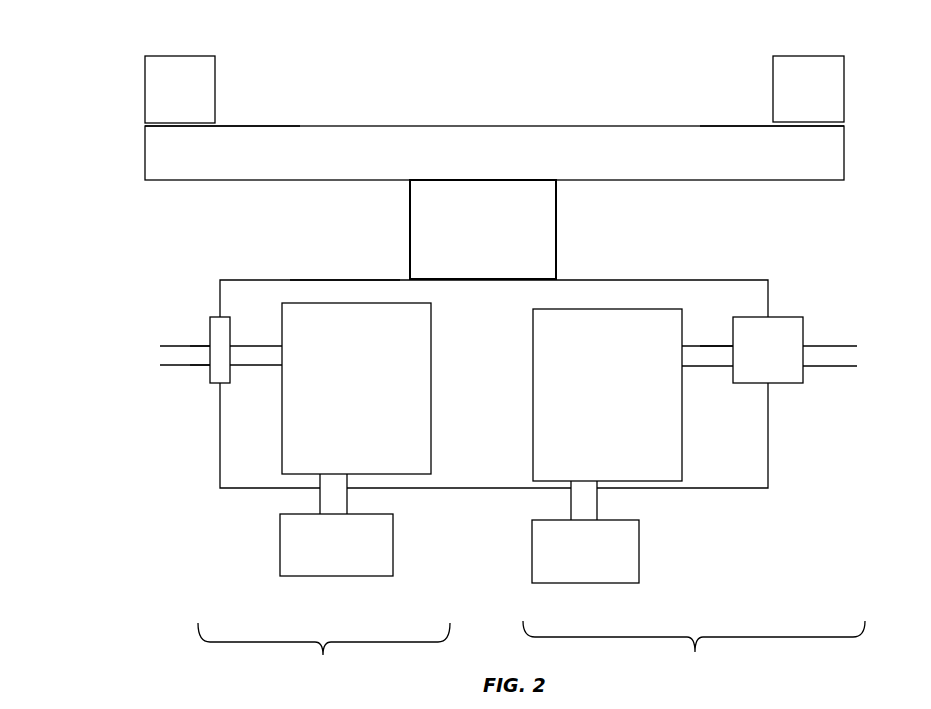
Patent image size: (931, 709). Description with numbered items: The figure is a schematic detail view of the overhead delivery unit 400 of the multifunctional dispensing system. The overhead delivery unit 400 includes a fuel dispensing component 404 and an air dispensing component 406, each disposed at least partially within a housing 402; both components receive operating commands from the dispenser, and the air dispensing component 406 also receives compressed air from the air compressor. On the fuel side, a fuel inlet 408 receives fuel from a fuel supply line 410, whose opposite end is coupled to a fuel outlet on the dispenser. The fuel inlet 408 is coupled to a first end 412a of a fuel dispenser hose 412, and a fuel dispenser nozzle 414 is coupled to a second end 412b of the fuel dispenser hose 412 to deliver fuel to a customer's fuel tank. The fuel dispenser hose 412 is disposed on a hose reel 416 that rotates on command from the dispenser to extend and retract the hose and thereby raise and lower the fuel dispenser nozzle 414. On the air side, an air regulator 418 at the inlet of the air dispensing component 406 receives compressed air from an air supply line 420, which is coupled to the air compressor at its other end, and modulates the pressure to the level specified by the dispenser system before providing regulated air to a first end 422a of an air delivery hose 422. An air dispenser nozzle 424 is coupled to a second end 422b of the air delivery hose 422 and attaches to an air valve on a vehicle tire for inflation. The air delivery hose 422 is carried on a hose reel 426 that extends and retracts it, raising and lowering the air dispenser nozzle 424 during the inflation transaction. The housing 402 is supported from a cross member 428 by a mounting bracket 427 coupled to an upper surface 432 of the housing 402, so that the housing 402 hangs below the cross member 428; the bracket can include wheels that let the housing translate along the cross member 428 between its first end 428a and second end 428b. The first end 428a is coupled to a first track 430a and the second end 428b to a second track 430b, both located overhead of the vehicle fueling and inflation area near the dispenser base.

The overhead delivery unit 400 is at (78, 110).
The housing 402 is at (256, 280).
The fuel dispensing component 404 is at (324, 652).
The air dispensing component 406 is at (694, 648).
The fuel inlet 408 is at (210, 372).
The fuel supply line 410 is at (185, 348).
The fuel dispenser hose 412 is at (270, 347).
The first end of fuel dispenser hose 412a is at (247, 368).
The second end of fuel dispenser hose 412b is at (323, 499).
The fuel dispenser nozzle 414 is at (336, 545).
The hose reel 416 is at (356, 388).
The air regulator 418 is at (768, 350).
The air supply line 420 is at (828, 345).
The air delivery hose 422 is at (692, 346).
The first end of air delivery hose 422a is at (718, 346).
The second end of air delivery hose 422b is at (597, 500).
The air dispenser nozzle 424 is at (585, 551).
The hose reel 426 is at (607, 395).
The mounting bracket 427 is at (483, 229).
The cross member 428 is at (494, 153).
The first end of cross member 428a is at (222, 145).
The second end of cross member 428b is at (772, 145).
The first track 430a is at (180, 89).
The second track 430b is at (808, 89).
The upper surface of housing 432 is at (332, 280).